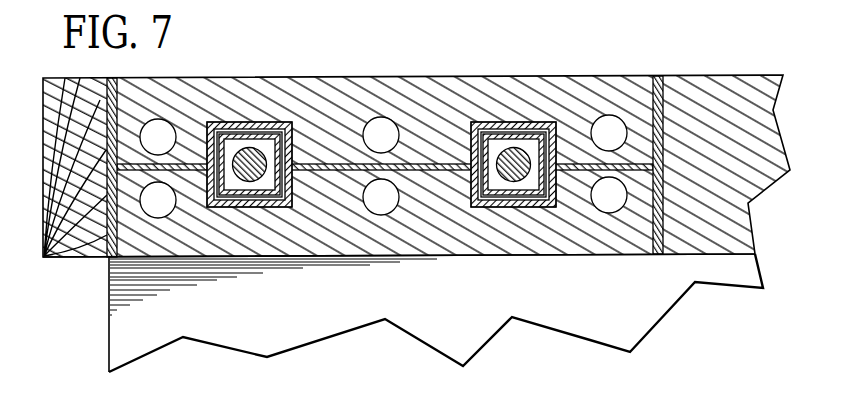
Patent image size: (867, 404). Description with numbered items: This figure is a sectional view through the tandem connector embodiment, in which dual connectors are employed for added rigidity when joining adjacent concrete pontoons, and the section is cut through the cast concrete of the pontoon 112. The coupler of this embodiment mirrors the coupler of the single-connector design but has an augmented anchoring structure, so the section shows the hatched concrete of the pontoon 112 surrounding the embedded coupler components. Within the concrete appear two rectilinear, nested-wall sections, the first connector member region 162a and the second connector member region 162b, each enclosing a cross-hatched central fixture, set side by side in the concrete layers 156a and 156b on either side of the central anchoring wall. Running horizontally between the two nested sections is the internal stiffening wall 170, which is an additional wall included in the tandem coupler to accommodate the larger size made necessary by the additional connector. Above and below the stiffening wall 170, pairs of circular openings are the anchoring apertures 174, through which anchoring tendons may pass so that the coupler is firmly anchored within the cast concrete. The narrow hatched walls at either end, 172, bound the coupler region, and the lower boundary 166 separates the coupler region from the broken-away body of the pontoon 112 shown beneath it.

The concrete pontoon 112 is at (349, 314).
The first insulating layer 156a is at (313, 110).
The second insulating layer 156b is at (582, 118).
The first shielded conductor 162a is at (251, 122).
The second shielded conductor 162b is at (515, 122).
The base layer boundary 166 is at (459, 228).
The internal stiffening wall 170 is at (408, 165).
The end wall 172 is at (664, 97).
The anchoring aperture 174 is at (383, 119).